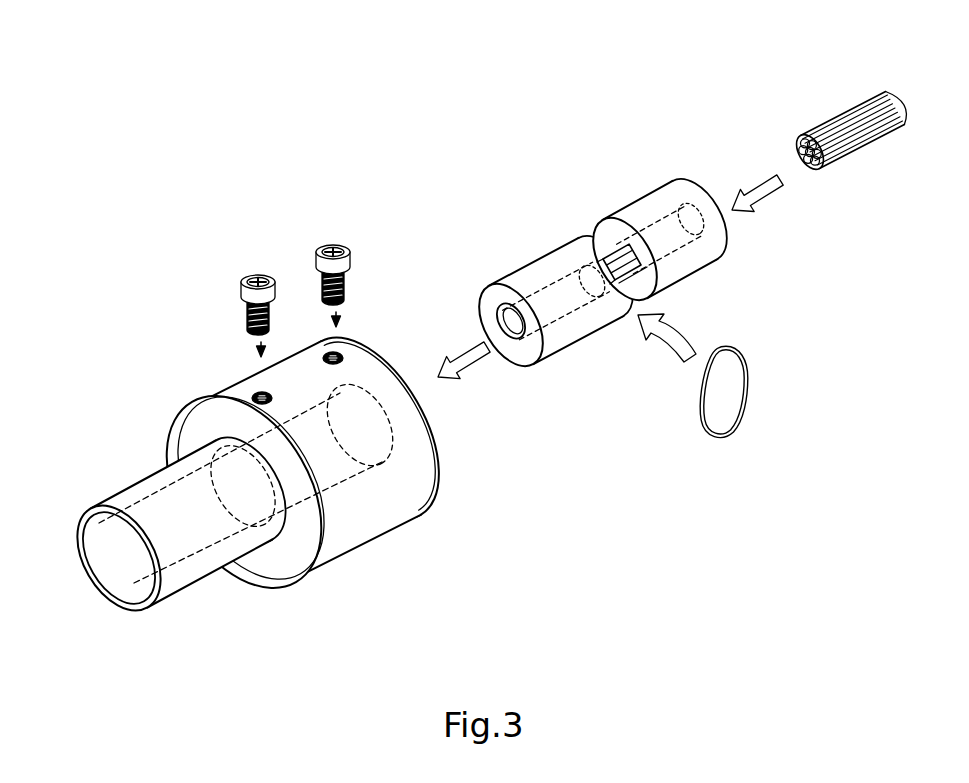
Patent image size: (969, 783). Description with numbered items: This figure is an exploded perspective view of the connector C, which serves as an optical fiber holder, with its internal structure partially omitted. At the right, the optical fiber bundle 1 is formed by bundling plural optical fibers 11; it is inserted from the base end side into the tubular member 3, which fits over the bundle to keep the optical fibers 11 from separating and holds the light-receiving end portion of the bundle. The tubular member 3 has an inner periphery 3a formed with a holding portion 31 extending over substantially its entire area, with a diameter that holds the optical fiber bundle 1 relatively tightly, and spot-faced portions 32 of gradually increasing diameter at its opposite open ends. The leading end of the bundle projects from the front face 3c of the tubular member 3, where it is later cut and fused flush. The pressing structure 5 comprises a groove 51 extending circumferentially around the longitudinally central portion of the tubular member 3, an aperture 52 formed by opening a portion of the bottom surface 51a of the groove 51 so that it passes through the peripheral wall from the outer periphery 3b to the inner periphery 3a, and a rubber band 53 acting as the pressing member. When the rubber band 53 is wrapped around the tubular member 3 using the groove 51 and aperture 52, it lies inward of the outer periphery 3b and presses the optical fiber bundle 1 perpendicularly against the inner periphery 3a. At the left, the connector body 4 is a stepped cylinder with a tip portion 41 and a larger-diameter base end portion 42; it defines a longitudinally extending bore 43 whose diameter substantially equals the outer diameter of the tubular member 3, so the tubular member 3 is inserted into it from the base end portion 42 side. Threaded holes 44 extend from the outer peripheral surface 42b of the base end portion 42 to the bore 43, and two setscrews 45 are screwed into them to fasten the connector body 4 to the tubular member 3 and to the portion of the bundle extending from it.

The connector C is at (322, 133).
The optical fiber bundle 1 is at (853, 116).
The optical fibers 11 is at (840, 127).
The tubular member 3 is at (660, 150).
The inner periphery 3a is at (556, 332).
The outer periphery 3b is at (715, 258).
The front face 3c is at (515, 355).
The holding portion 31 is at (522, 248).
The spot-faced portions 32 is at (483, 293).
The connector body 4 is at (108, 372).
The tip portion 41 is at (192, 602).
The base end portion 42 is at (315, 482).
The outer surface of cylindrical body 42b is at (387, 514).
The bore 43 is at (120, 578).
The threaded holes 44 is at (261, 390).
The setscrews 45 is at (270, 280).
The pressing structure 5 is at (649, 252).
The groove 51 is at (643, 280).
The bottom surface 51a is at (630, 293).
The aperture 52 is at (611, 250).
The rubber band 53 is at (745, 372).